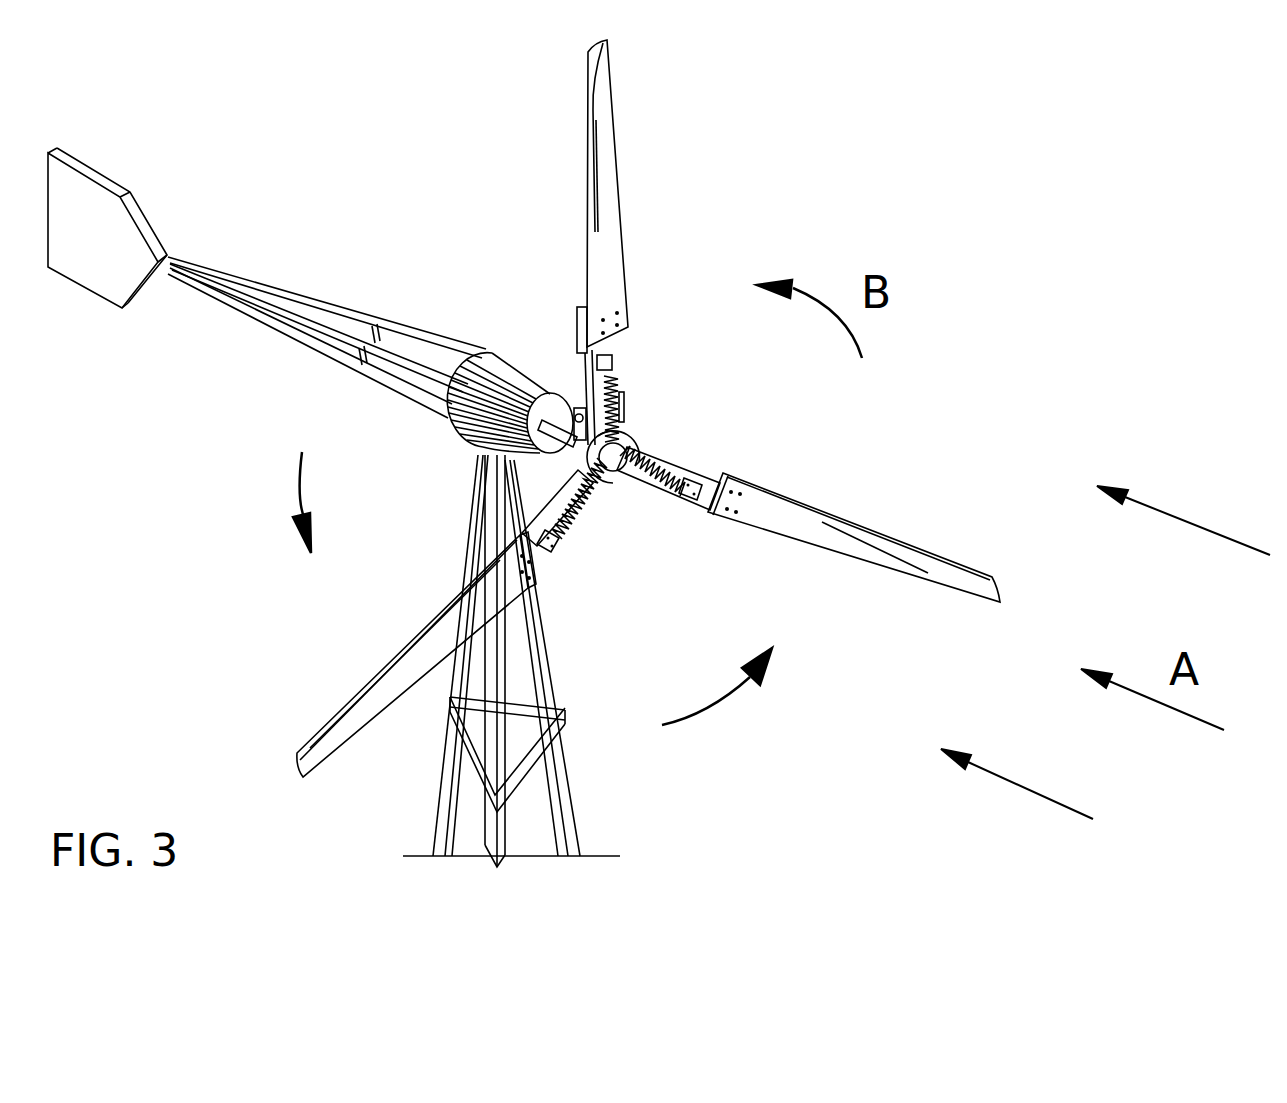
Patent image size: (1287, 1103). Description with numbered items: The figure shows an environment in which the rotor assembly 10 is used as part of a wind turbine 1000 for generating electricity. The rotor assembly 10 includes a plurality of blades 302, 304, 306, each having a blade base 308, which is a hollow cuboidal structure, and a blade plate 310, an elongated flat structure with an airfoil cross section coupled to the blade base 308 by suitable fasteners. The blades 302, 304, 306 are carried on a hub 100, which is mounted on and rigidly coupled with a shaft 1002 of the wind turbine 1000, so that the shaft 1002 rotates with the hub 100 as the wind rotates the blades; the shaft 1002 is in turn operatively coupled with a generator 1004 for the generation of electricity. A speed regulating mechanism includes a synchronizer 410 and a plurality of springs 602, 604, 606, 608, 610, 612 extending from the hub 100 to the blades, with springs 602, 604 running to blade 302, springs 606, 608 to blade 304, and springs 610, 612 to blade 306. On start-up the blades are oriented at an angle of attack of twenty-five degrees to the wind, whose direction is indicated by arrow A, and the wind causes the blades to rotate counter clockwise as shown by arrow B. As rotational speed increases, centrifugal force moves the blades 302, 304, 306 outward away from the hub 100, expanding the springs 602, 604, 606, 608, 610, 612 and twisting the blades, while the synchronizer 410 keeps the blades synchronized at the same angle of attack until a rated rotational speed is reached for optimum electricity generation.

The rotor assembly 10 is at (668, 190).
The hub 100 is at (625, 440).
The blade 302 is at (575, 218).
The blade 304 is at (385, 640).
The blade 306 is at (815, 485).
The blade base 308 is at (580, 315).
The blade plate 310 is at (612, 228).
The synchronizer 410 is at (578, 415).
The spring 602 is at (620, 407).
The spring 604 is at (608, 393).
The spring 606 is at (600, 487).
The spring 608 is at (580, 522).
The spring 610 is at (678, 492).
The spring 612 is at (683, 480).
The wind turbine 1000 is at (335, 262).
The shaft 1002 is at (548, 445).
The generator 1004 is at (455, 402).